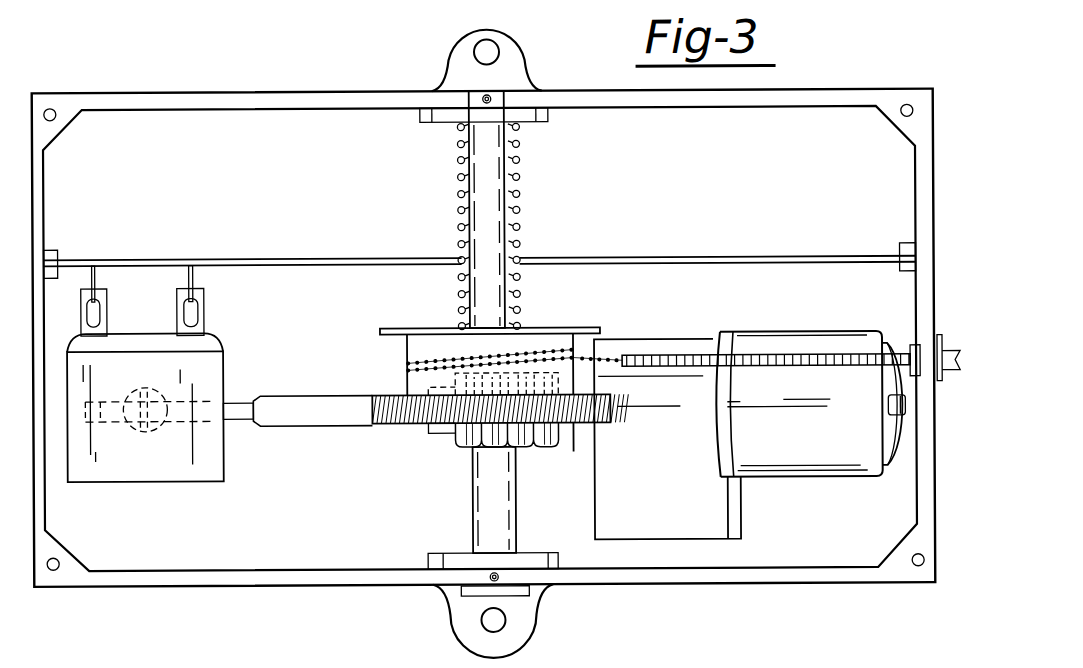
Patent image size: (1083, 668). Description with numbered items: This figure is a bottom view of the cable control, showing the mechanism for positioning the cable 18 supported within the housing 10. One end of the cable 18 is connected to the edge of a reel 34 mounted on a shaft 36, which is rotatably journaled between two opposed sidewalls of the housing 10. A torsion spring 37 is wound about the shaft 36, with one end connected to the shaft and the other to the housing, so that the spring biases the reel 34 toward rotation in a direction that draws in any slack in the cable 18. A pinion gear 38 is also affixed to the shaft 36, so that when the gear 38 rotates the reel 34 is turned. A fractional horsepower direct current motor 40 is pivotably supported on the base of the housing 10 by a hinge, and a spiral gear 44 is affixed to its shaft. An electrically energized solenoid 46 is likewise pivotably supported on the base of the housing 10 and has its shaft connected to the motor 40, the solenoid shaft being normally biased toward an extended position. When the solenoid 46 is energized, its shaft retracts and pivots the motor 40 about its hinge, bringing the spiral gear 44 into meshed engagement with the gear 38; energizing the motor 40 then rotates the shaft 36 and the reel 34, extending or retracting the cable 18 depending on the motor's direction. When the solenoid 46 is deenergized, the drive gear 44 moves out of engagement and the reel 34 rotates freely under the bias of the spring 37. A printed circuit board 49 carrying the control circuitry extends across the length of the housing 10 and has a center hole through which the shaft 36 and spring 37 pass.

The housing 10 is at (185, 93).
The cable 18 is at (607, 362).
The reel 34 is at (537, 328).
The shaft 36 is at (490, 511).
The torsion spring 37 is at (477, 182).
The pinion gear 38 is at (380, 398).
The direct current motor 40 is at (843, 458).
The spiral gear 44 is at (462, 437).
The solenoid 46 is at (195, 470).
The printed circuit board 49 is at (682, 257).